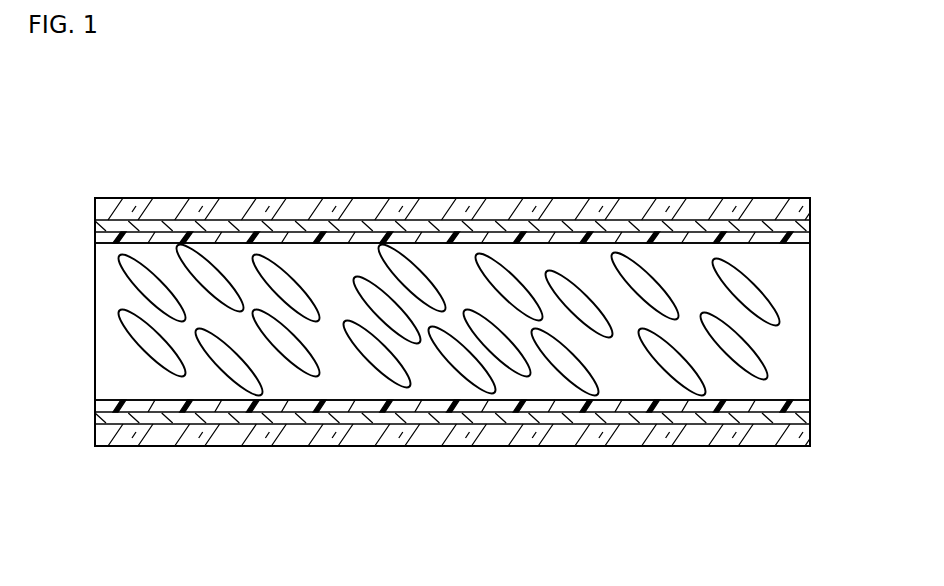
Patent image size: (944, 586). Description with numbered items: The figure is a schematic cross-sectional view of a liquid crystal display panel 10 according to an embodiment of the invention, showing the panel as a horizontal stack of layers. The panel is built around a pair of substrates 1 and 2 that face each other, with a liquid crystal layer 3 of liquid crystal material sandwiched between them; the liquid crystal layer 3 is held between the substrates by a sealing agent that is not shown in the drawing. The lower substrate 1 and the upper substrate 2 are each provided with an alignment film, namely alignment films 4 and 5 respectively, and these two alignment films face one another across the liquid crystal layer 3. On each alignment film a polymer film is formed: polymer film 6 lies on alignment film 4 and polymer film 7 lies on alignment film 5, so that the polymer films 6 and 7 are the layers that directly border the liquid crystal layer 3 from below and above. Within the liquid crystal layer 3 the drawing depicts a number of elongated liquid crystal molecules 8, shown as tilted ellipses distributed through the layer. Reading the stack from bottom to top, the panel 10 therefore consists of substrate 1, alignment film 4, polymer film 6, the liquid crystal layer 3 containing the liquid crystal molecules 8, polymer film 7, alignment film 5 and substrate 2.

The liquid crystal display panel 10 is at (813, 141).
The substrate 2 is at (812, 208).
The alignment film 5 is at (811, 227).
The polymer film 7 is at (811, 240).
The liquid crystal layer 3 is at (811, 318).
The liquid crystal molecules 8 is at (130, 326).
The polymer film 6 is at (809, 408).
The alignment film 4 is at (809, 418).
The substrate 1 is at (809, 436).